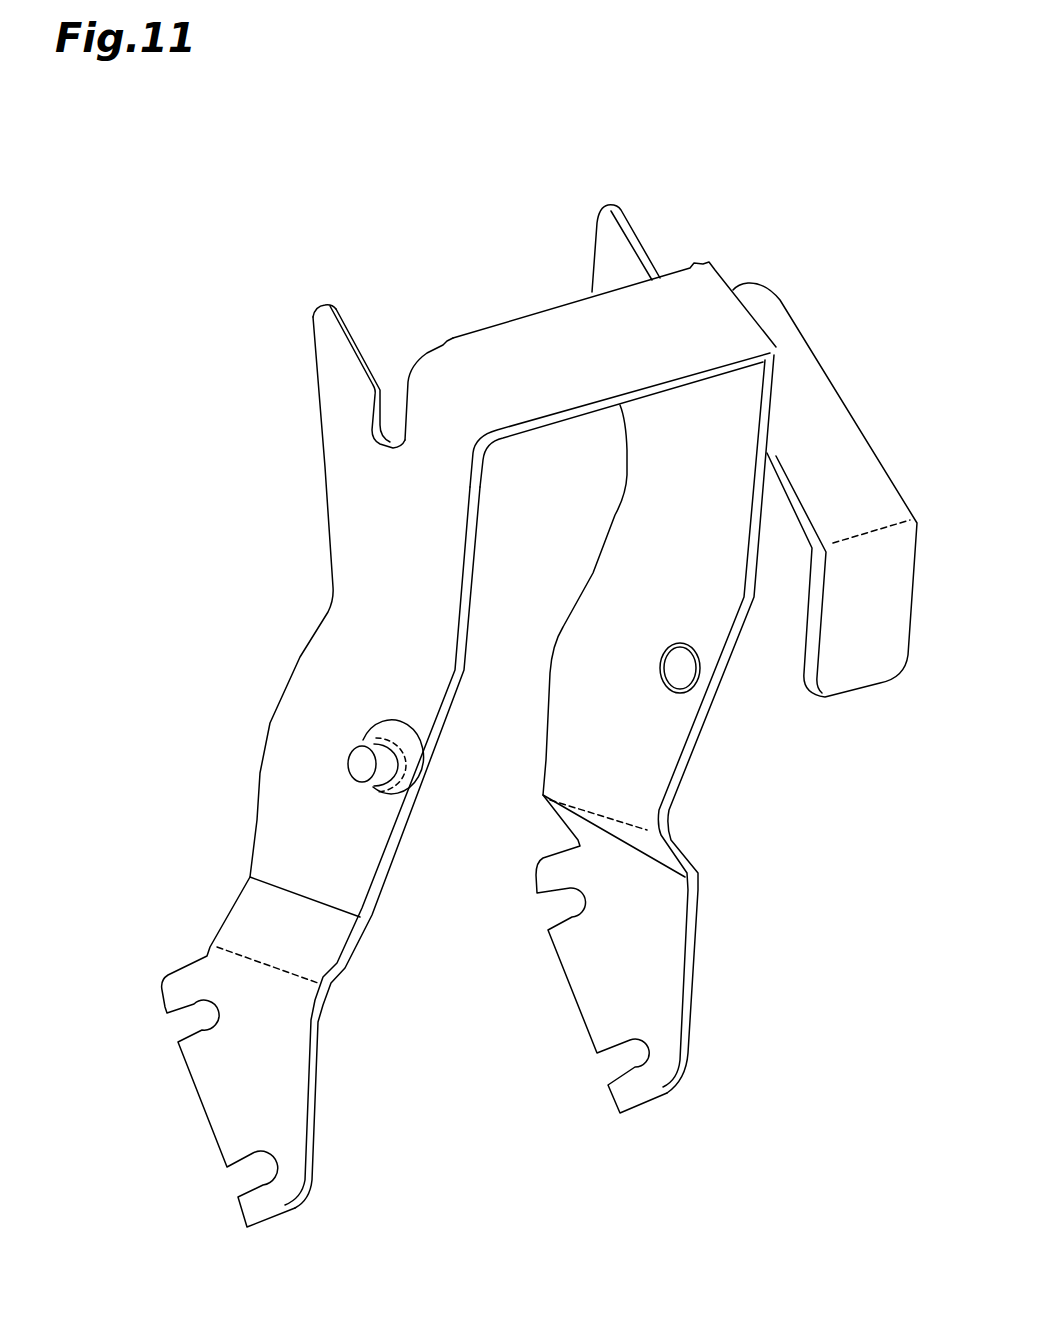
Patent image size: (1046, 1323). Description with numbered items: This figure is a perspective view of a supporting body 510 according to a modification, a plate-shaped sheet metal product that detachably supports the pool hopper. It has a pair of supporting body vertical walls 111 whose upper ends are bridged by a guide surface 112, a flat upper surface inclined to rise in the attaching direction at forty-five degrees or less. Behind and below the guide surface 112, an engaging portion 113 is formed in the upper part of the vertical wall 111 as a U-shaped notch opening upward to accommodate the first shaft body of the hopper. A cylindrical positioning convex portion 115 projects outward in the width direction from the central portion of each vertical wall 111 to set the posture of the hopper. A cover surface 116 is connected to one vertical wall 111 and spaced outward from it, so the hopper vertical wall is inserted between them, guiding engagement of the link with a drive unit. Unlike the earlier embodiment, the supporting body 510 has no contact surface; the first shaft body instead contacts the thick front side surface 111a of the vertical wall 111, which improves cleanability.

The supporting body 510 is at (218, 210).
The supporting body vertical wall 111 is at (368, 545).
The side surface 111a is at (440, 733).
The guide surface 112 is at (528, 343).
The engaging portion 113 is at (388, 437).
The positioning convex portion 115 is at (360, 765).
The cover surface 116 is at (857, 453).